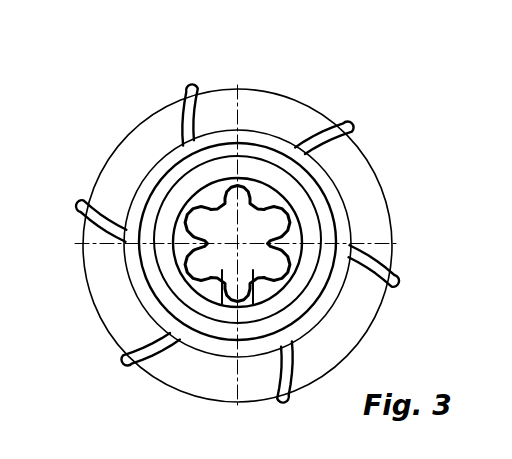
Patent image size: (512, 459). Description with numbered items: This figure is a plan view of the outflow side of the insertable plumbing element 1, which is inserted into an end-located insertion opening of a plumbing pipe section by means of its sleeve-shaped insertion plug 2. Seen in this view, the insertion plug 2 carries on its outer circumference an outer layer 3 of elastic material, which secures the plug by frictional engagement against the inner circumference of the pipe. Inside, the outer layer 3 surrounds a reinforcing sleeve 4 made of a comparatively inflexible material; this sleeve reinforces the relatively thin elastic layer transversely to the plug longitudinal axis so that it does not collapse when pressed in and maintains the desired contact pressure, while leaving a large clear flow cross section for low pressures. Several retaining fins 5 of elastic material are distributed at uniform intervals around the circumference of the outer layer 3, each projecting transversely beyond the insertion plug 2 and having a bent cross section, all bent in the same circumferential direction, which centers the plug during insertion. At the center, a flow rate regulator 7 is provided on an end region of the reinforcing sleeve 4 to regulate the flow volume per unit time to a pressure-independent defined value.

The insertable plumbing element 1 is at (408, 116).
The insertion plug 2 is at (358, 213).
The outer layer 3 is at (328, 300).
The reinforcing sleeve 4 is at (208, 332).
The retaining fin 5 is at (393, 275).
The flow rate regulator 7 is at (268, 180).